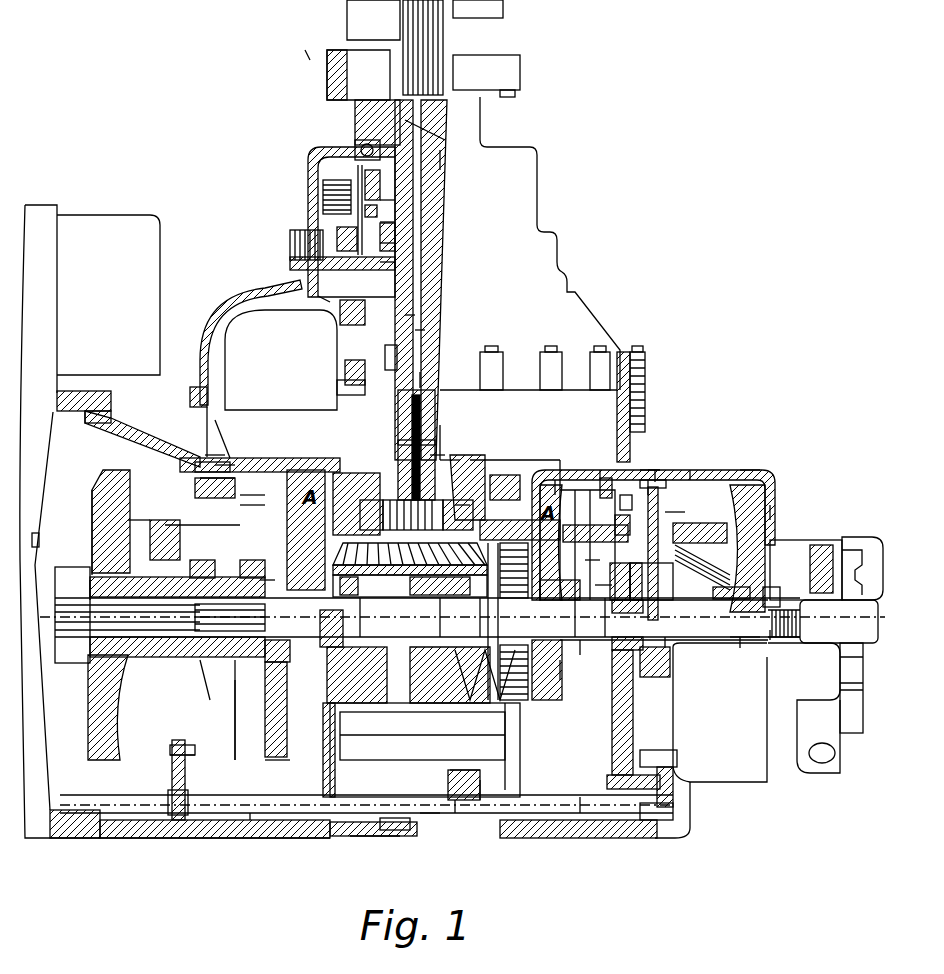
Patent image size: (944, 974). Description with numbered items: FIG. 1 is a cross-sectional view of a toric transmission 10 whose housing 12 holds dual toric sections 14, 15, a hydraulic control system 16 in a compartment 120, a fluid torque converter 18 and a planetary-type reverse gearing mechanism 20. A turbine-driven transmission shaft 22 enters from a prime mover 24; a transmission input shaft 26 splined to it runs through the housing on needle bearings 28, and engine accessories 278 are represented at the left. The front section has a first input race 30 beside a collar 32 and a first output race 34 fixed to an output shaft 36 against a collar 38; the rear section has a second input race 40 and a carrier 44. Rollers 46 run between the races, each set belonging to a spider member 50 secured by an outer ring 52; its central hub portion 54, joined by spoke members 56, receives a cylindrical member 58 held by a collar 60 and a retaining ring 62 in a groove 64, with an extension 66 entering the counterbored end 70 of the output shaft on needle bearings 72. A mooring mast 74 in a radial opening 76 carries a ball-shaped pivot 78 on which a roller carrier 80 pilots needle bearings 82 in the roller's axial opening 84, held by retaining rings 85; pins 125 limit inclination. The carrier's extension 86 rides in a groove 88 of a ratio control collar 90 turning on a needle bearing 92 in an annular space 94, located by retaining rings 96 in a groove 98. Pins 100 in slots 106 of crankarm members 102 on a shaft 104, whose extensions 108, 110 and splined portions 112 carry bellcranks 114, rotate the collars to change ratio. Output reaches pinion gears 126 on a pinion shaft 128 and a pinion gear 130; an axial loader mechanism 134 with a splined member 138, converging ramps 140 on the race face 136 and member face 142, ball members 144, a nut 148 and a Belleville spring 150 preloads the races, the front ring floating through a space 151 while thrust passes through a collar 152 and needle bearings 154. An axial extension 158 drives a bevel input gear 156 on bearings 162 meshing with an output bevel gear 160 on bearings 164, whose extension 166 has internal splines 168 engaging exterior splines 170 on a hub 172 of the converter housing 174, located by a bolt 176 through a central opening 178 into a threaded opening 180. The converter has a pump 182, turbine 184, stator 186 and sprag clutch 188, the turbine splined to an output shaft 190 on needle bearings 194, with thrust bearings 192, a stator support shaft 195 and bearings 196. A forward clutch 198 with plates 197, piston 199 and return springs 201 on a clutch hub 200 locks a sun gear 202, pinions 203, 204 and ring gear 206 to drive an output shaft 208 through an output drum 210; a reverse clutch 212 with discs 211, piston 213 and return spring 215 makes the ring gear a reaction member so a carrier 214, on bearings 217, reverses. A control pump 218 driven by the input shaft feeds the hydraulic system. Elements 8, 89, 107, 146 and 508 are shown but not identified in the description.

The bearing 8 is at (135, 520).
The transmission 10 is at (296, 35).
The housing 12 is at (165, 458).
The toric section 14 is at (144, 478).
The toric section 15 is at (745, 463).
The hydraulic control system 16 is at (414, 753).
The fluid torque converter 18 is at (215, 340).
The planetary-type reverse gearing mechanism 20 is at (264, 225).
The power turbine-driven transmission shaft 22 is at (82, 632).
The prime mover 24 is at (44, 215).
The transmission input shaft 26 is at (388, 672).
The needle bearings 28 is at (148, 632).
The first input race 30 is at (96, 490).
The collar 32 is at (90, 585).
The first output race 34 is at (270, 762).
The output shaft 36 is at (370, 628).
The collar 38 is at (300, 572).
The second input race 40 is at (770, 482).
The carrier 44 is at (560, 590).
The roller member 46 is at (100, 540).
The spider member 50 is at (250, 752).
The outer ring 52 is at (236, 440).
The central hub portion 54 is at (196, 574).
The spoke members 56 is at (238, 705).
The cylindrical member 58 is at (270, 656).
The collar 60 is at (195, 590).
The retaining ring 62 is at (250, 580).
The groove 64 is at (205, 662).
The extension 66 is at (266, 590).
The counterbored end 70 is at (242, 682).
The needle bearings 72 is at (285, 630).
The mooring mast 74 is at (180, 560).
The radial opening 76 is at (672, 645).
The ball-shaped pivot 78 is at (625, 592).
The carrier 80 is at (690, 575).
The needle bearings 82 is at (690, 555).
The axial opening 84 is at (632, 565).
The retaining rings 85 is at (734, 532).
The extension 86 is at (680, 490).
The groove 88 is at (645, 480).
The gear 89 is at (180, 528).
The ratio control collar 90 is at (256, 512).
The needle bearing 92 is at (200, 468).
The concentric annular space 94 is at (210, 462).
The retaining rings 96 is at (200, 490).
The groove 98 is at (205, 480).
The pins 100 is at (172, 760).
The crankarm members 102 is at (168, 792).
The shaft 104 is at (360, 838).
The slots 106 is at (176, 746).
The pan 107 is at (432, 826).
The shaft extension 108 is at (258, 816).
The shaft extension 110 is at (585, 808).
The splined portions 112 is at (460, 815).
The bellcrank members 114 is at (456, 778).
The housing 120 is at (310, 800).
The pins 125 is at (480, 785).
The pinion gears 126 is at (560, 682).
The pinion shaft 128 is at (512, 540).
The pinion gear 130 is at (590, 560).
The axial loader mechanism 134 is at (800, 540).
The outer face 136 is at (735, 645).
The member 138 is at (808, 585).
The converging ramps 140 is at (760, 592).
The face 142 is at (558, 478).
The ball members 144 is at (745, 640).
The spline 146 is at (572, 617).
The nut 148 is at (575, 525).
The Belleville spring 150 is at (835, 620).
The space 151 is at (226, 465).
The collar 152 is at (555, 560).
The needle bearings 154 is at (600, 617).
The bevel input gear 156 is at (473, 617).
The axial extension 158 is at (440, 617).
The output bevel gear 160 is at (492, 505).
The bearings 162 is at (402, 576).
The bearings 164 is at (460, 486).
The extension 166 is at (445, 460).
The internal splines 168 is at (428, 452).
The exterior splines 170 is at (456, 505).
The hub 172 is at (402, 400).
The housing 174 is at (252, 500).
The bolt 176 is at (425, 432).
The central opening 178 is at (445, 442).
The threaded opening 180 is at (645, 608).
The pump 182 is at (395, 356).
The turbine 184 is at (332, 430).
The stator 186 is at (340, 385).
The sprag clutch 188 is at (355, 370).
The output shaft 190 is at (448, 345).
The thrust bearings 192 is at (365, 492).
The needle bearings 194 is at (440, 160).
The stator support shaft 195 is at (420, 335).
The bearings 196 is at (410, 320).
The discs 197 is at (330, 200).
The clutch 198 is at (325, 185).
The piston 199 is at (360, 150).
The clutch hub 200 is at (400, 210).
The return springs 201 is at (400, 195).
The sun gear 202 is at (395, 243).
The pinions 203 is at (390, 262).
The pinions 204 is at (330, 215).
The ring gear 206 is at (340, 246).
The output shaft 208 is at (430, 68).
The output drum 210 is at (420, 140).
The discs 211 is at (292, 250).
The reverse clutch 212 is at (320, 266).
The piston 213 is at (352, 320).
The carrier 214 is at (395, 220).
The return spring 215 is at (320, 300).
The bearings 217 is at (372, 97).
The control pump 218 is at (855, 537).
The engine accessories 278 is at (112, 232).
The bolt 508 is at (460, 778).